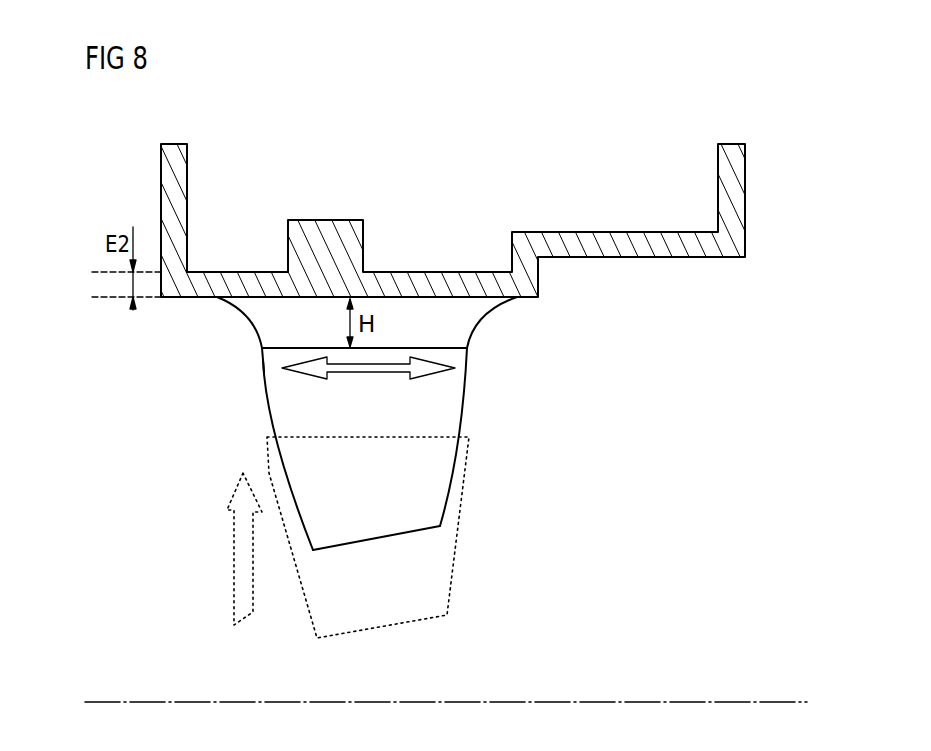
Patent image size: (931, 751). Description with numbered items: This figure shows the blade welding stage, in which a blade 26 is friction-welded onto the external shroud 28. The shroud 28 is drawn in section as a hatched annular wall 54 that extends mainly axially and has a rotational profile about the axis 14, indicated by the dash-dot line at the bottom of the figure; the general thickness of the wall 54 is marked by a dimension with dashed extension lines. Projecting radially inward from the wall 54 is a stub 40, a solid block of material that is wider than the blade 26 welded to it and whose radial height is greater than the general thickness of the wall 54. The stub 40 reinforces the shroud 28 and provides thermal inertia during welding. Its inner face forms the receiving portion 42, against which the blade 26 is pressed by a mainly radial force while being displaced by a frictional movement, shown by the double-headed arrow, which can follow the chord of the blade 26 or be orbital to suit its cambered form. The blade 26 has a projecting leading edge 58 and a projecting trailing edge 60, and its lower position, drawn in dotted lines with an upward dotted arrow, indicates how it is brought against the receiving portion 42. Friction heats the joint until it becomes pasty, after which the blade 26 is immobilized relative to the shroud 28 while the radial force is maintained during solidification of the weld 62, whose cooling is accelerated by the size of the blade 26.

The external shroud 28 is at (451, 299).
The annular wall 54 is at (417, 283).
The stub 40 is at (275, 324).
The receiving portion 42 is at (262, 360).
The leading edge 58 is at (270, 413).
The trailing edge 60 is at (462, 415).
The weld 62 is at (467, 348).
The blade 26 is at (438, 470).
The axis 14 is at (538, 700).